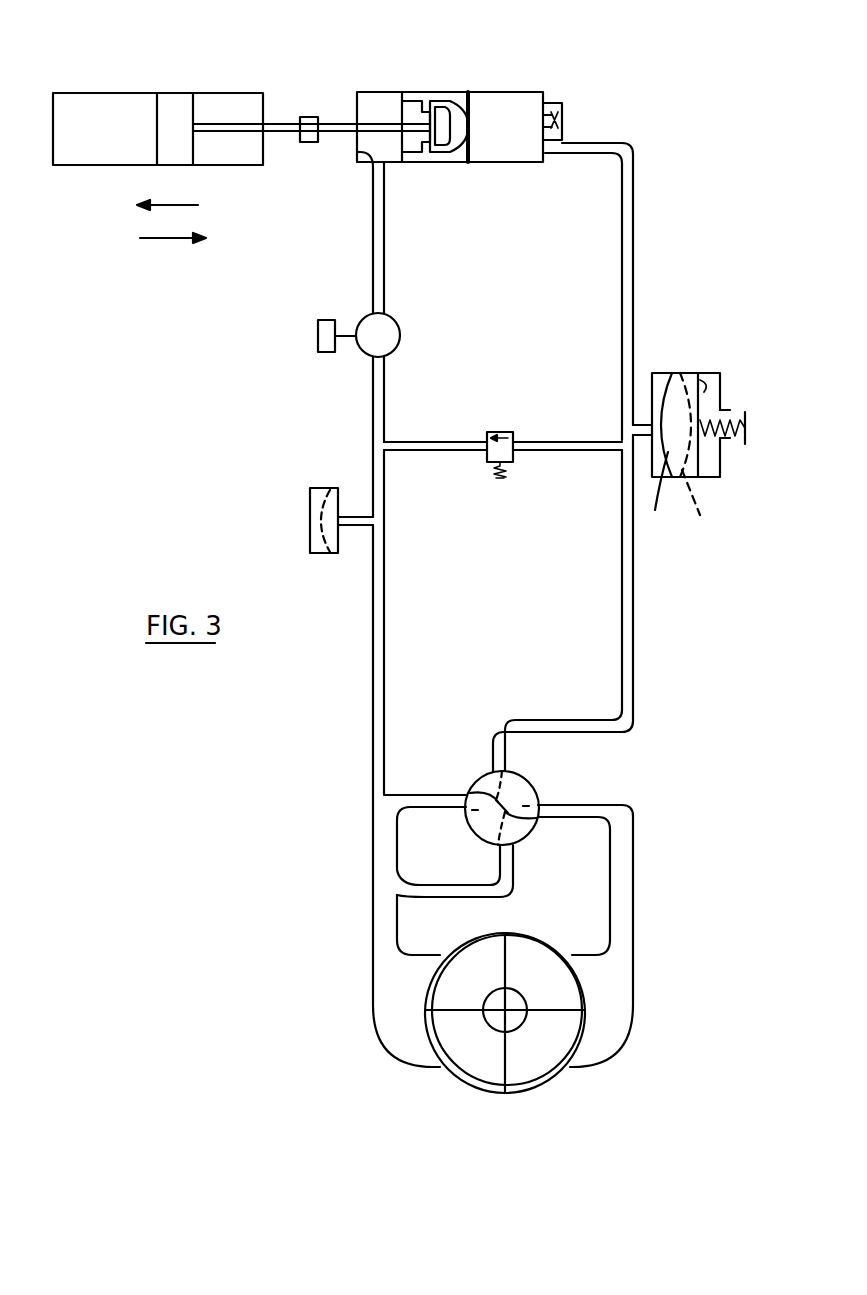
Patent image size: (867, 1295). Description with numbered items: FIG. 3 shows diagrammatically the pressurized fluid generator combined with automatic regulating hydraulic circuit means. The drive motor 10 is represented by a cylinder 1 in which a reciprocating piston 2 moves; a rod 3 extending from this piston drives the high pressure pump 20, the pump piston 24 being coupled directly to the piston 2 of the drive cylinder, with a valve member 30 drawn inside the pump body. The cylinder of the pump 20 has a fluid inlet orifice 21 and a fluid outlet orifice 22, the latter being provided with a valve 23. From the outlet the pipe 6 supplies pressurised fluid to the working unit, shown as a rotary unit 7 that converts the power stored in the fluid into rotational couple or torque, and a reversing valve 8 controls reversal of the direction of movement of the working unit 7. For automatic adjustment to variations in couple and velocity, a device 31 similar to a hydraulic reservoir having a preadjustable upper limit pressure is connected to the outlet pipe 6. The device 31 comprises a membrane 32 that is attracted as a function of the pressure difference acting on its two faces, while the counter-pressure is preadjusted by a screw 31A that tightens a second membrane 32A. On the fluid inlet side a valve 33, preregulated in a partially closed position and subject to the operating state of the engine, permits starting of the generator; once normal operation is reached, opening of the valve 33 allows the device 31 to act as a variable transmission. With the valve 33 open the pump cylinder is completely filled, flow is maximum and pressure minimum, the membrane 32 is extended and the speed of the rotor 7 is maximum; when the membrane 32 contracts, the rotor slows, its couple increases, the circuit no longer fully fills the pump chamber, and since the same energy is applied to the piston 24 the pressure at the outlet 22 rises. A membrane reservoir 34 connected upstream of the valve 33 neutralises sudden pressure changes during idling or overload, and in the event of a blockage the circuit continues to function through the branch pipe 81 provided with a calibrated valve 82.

The cylinder 1 is at (68, 156).
The reciprocating piston 2 is at (170, 100).
The piston rod 3 is at (218, 125).
The drive motor 10 is at (92, 88).
The high pressure pump 20 is at (486, 74).
The fluid inlet orifice 21 is at (358, 165).
The fluid outlet orifice 22 is at (540, 128).
The valve 23 is at (563, 115).
The piston 24 is at (418, 93).
The valve member 30 is at (472, 128).
The outlet pipe 6 is at (634, 290).
The rotary unit 7 is at (538, 1100).
The reversing valve 8 is at (537, 795).
The device 31 is at (690, 373).
The screw 31A is at (748, 432).
The membrane 32 is at (652, 428).
The second membrane 32A is at (705, 385).
The valve 33 is at (358, 348).
The membrane reservoir 34 is at (310, 520).
The branch pipe 81 is at (555, 451).
The calibrated valve 82 is at (488, 463).